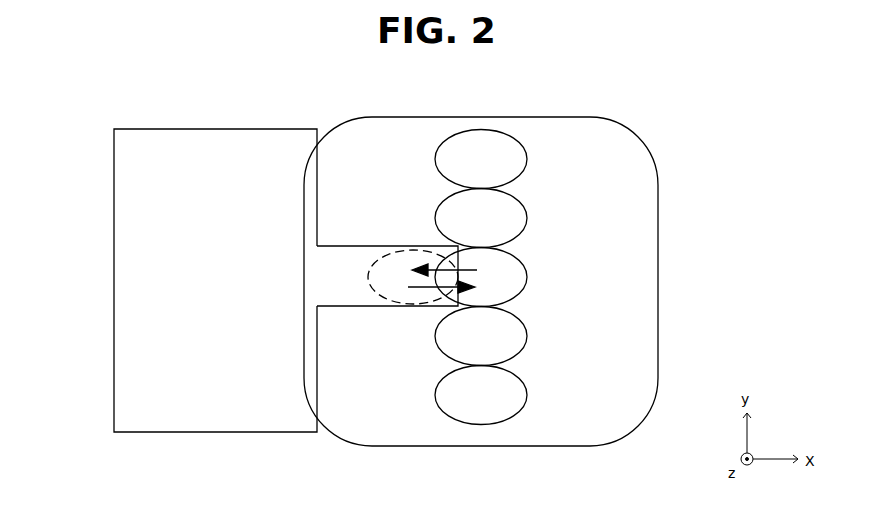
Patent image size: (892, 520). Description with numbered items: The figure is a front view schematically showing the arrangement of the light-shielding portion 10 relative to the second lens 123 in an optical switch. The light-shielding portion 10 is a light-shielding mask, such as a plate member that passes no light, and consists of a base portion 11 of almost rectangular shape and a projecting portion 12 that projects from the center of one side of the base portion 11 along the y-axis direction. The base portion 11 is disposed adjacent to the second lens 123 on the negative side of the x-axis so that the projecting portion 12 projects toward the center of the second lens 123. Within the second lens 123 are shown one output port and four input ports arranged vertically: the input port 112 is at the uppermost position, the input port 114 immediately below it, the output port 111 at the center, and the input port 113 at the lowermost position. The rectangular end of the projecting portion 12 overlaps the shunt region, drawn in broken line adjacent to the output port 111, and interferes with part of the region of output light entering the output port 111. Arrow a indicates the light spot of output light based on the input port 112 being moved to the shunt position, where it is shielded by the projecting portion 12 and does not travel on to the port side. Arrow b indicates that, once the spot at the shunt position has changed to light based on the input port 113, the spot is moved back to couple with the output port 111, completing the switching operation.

The light-shielding portion 10 is at (262, 260).
The base portion 11 is at (255, 128).
The projecting portion 12 is at (355, 245).
The second lens 123 is at (482, 116).
The output port 111 is at (528, 277).
The input port 112 is at (528, 160).
The input port 113 is at (528, 396).
The input port 114 is at (528, 219).
The light spot movement to shunt position a is at (428, 257).
The light spot coupling movement b is at (411, 299).